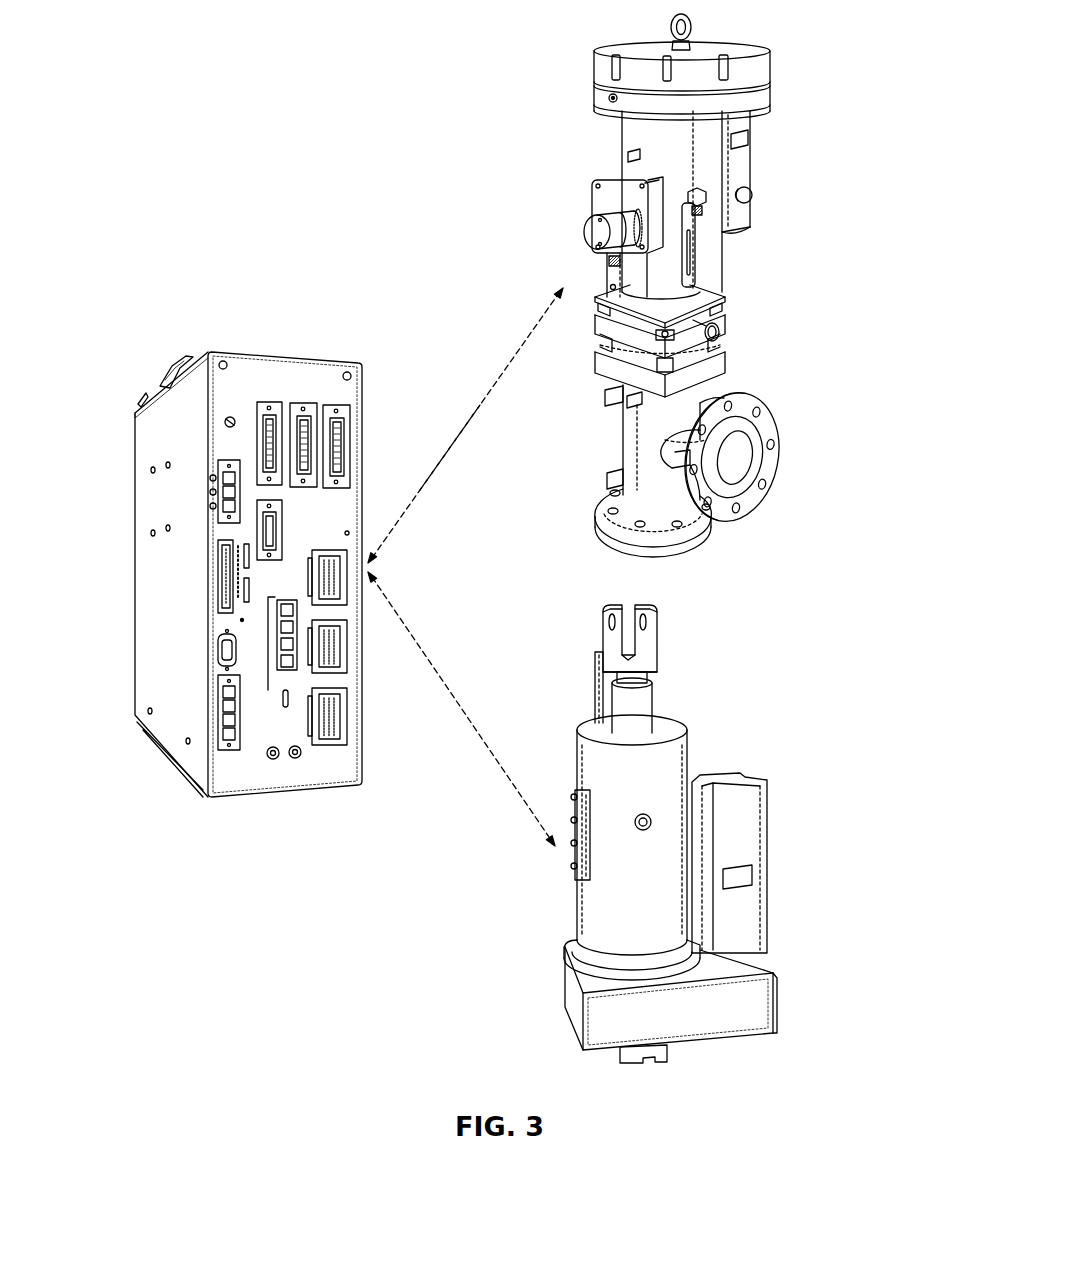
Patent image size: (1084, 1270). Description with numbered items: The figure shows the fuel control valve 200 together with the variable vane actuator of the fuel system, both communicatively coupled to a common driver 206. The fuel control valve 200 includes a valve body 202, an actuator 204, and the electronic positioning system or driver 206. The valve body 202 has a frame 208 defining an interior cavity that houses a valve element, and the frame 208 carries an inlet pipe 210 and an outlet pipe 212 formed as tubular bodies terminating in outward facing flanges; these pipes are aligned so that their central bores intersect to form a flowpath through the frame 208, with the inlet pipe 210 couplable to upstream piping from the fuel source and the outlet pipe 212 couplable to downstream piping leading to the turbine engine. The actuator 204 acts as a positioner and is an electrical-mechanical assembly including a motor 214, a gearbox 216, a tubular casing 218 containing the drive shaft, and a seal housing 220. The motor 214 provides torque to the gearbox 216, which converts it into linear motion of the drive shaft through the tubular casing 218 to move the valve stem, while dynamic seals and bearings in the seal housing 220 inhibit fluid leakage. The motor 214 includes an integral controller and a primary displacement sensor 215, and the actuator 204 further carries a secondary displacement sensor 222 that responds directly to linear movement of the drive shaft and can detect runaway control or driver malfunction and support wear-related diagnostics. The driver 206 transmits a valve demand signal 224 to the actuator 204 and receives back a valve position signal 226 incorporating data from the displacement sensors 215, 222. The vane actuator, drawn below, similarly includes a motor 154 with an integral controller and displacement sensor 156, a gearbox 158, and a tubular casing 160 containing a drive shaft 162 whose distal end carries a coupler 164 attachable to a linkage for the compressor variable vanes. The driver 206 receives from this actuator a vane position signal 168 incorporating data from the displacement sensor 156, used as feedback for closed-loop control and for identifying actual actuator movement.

The fuel control valve 200 is at (834, 30).
The valve body 202 is at (777, 380).
The actuator 204 is at (826, 201).
The driver 206 is at (322, 340).
The frame 208 is at (601, 432).
The inlet pipe 210 is at (801, 449).
The outlet pipe 212 is at (705, 562).
The motor 214 is at (766, 168).
The primary displacement sensor 215 is at (750, 135).
The gearbox 216 is at (613, 48).
The tubular casing 218 is at (621, 140).
The seal housing 220 is at (745, 316).
The secondary displacement sensor 222 is at (585, 228).
The valve demand signal 224 is at (530, 335).
The valve position signal 226 is at (425, 480).
The motor 154 is at (760, 812).
The displacement sensor 156 is at (740, 873).
The gearbox 158 is at (773, 1012).
The tubular casing 160 is at (690, 751).
The drive shaft 162 is at (655, 705).
The coupler 164 is at (661, 642).
The vane position signal 168 is at (456, 737).